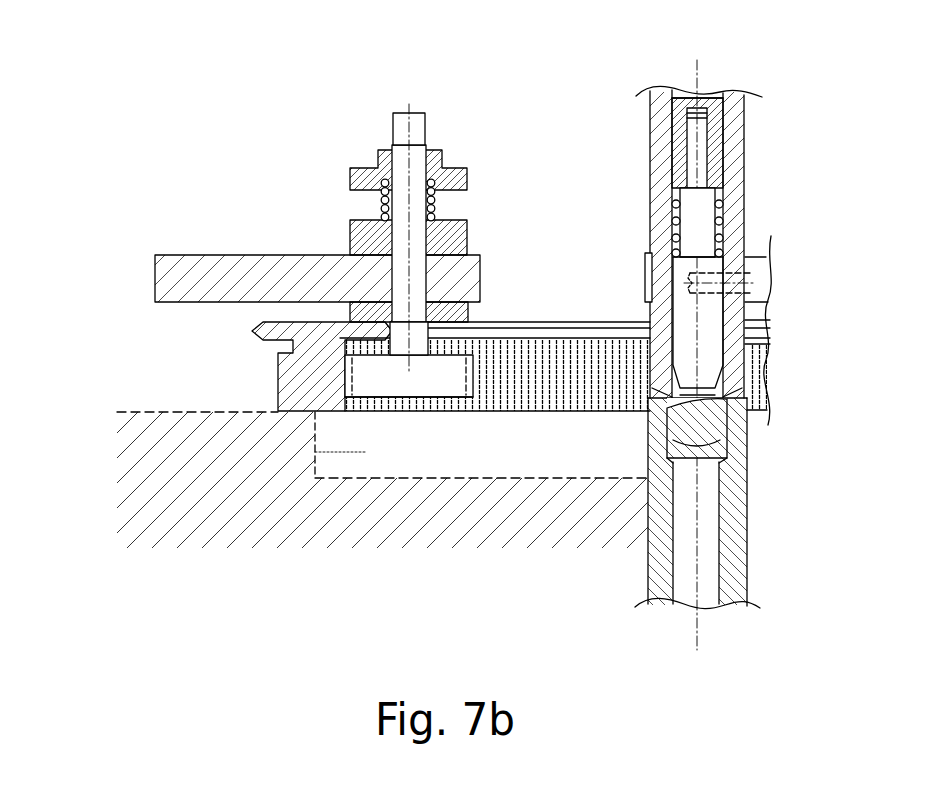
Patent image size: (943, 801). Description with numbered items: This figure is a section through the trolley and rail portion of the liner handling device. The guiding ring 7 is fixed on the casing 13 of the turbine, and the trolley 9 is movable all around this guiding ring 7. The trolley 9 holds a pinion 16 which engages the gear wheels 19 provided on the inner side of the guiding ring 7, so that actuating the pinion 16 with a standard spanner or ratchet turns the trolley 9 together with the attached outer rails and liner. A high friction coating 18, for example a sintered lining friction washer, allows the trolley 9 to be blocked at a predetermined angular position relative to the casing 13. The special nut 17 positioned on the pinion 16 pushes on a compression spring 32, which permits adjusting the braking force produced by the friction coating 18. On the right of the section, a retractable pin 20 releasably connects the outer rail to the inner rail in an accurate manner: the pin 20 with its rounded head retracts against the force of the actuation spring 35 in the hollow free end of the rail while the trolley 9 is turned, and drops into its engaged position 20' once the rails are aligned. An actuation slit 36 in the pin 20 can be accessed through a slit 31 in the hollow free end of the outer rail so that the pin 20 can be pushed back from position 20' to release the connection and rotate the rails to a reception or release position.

The guiding ring 7 is at (283, 389).
The trolley 9 is at (172, 260).
The casing 13 is at (130, 503).
The pinion 16 is at (400, 156).
The special nut 17 is at (363, 170).
The high friction coating 18 is at (393, 250).
The gear wheels 19 is at (383, 383).
The retractable pin 20 is at (751, 247).
The pin position 20' is at (752, 449).
The slit 31 is at (735, 293).
The compression spring 32 is at (383, 207).
The actuation spring 35 is at (720, 257).
The actuation slit 36 is at (743, 208).